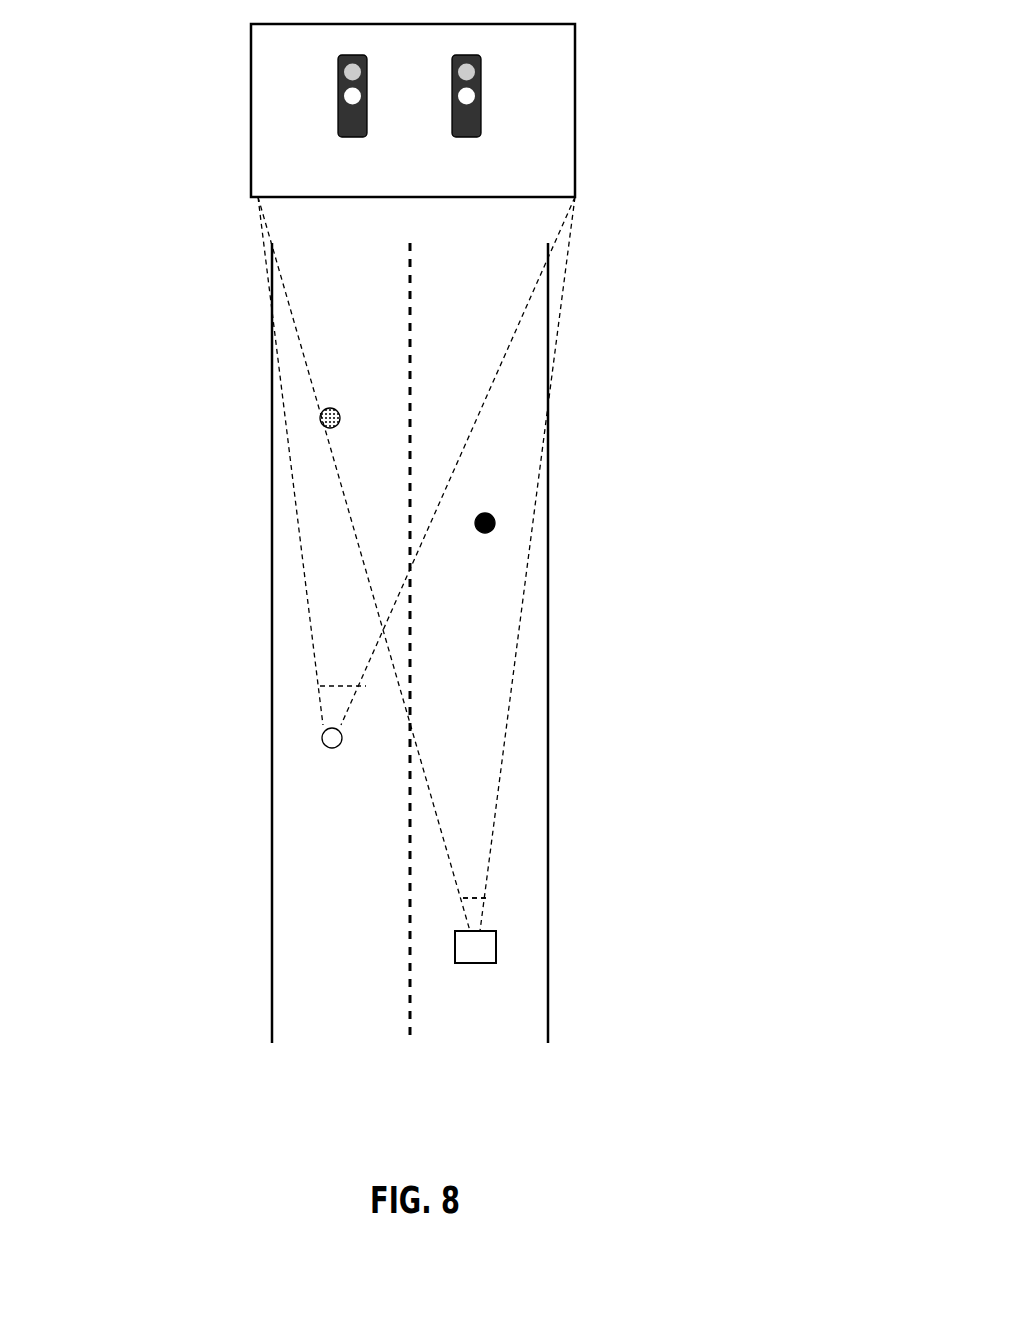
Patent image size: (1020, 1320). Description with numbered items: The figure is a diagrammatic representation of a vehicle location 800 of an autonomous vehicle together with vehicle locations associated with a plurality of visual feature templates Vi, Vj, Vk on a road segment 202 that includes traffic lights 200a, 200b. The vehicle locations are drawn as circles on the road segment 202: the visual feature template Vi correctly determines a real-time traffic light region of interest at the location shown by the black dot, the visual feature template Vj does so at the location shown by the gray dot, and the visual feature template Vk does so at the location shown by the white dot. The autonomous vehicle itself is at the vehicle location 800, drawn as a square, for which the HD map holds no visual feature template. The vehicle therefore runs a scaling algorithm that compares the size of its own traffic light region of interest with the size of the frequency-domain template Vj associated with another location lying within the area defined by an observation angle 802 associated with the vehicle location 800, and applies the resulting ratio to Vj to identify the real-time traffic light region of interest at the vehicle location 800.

The traffic light 200a is at (333, 96).
The traffic light 200b is at (486, 95).
The road segment 202 is at (270, 362).
The vehicle location 800 is at (496, 937).
The observation angle 802 is at (470, 863).
The visual feature template Vi is at (506, 521).
The visual feature template Vj is at (310, 418).
The visual feature template Vk is at (312, 737).